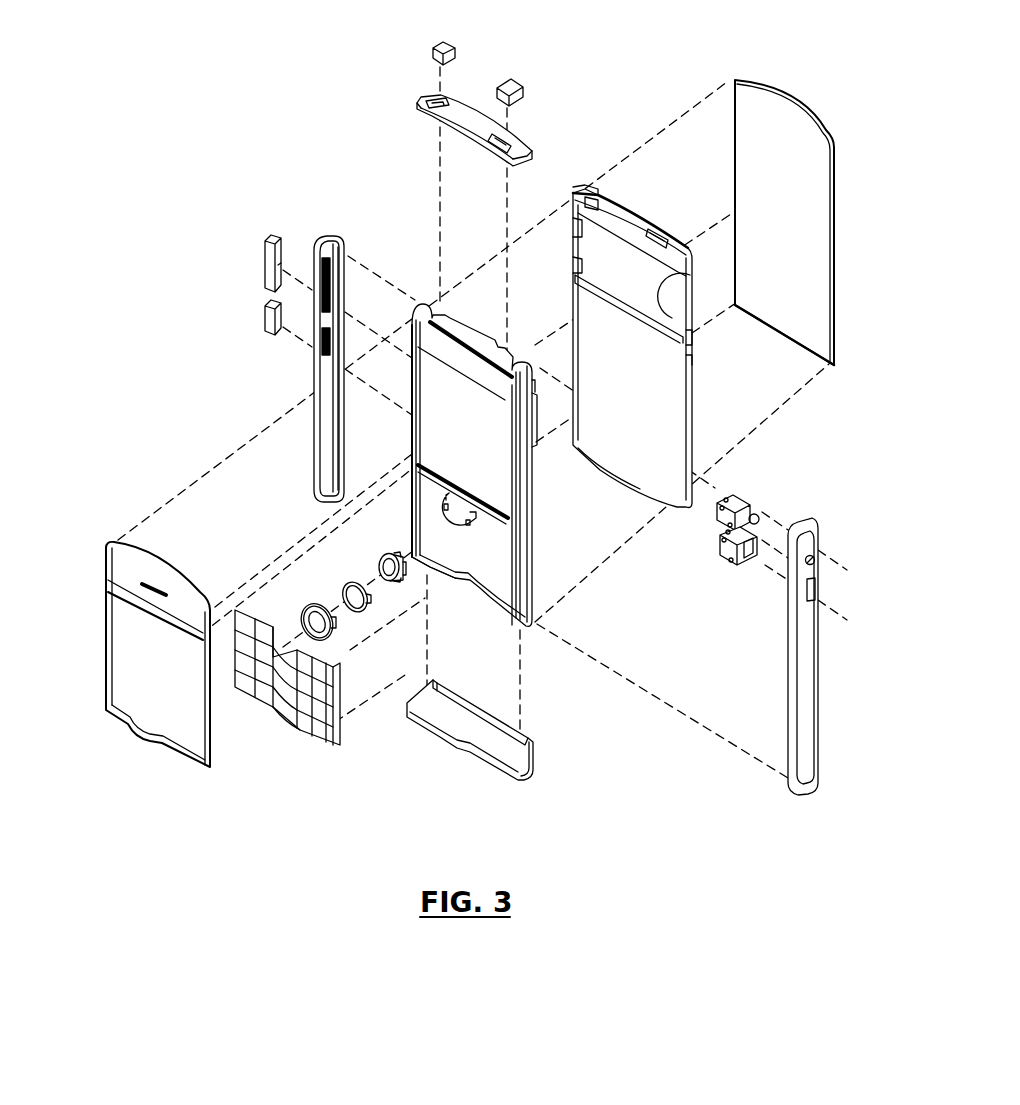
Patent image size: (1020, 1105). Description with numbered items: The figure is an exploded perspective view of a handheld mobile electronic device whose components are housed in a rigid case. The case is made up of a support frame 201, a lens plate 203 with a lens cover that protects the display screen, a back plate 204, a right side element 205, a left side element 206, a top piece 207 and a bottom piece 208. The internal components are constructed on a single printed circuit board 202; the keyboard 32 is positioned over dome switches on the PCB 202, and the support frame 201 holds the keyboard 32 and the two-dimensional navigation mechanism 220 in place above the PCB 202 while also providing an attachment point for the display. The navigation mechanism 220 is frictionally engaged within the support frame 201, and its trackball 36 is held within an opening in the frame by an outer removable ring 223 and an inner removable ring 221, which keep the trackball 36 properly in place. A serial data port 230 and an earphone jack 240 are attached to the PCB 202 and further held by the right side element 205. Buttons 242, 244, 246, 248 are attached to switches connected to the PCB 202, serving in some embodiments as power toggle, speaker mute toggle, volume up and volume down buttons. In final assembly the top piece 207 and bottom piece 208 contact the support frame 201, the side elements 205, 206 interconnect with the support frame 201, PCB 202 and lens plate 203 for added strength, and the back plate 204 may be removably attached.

The keyboard 32 is at (295, 738).
The trackball 36 is at (390, 590).
The support frame 201 is at (482, 463).
The printed circuit board 202 is at (643, 210).
The lens plate 203 is at (172, 563).
The back plate 204 is at (791, 98).
The right side element 205 is at (783, 648).
The left side element 206 is at (333, 235).
The top piece 207 is at (424, 96).
The bottom piece 208 is at (445, 754).
The two-dimensional navigation mechanism 220 is at (416, 578).
The inner removable ring 221 is at (363, 610).
The outer removable ring 223 is at (333, 630).
The serial data port 230 is at (717, 551).
The earphone jack 240 is at (710, 515).
The button 242 is at (434, 40).
The button 244 is at (516, 80).
The button 246 is at (268, 237).
The button 248 is at (268, 303).